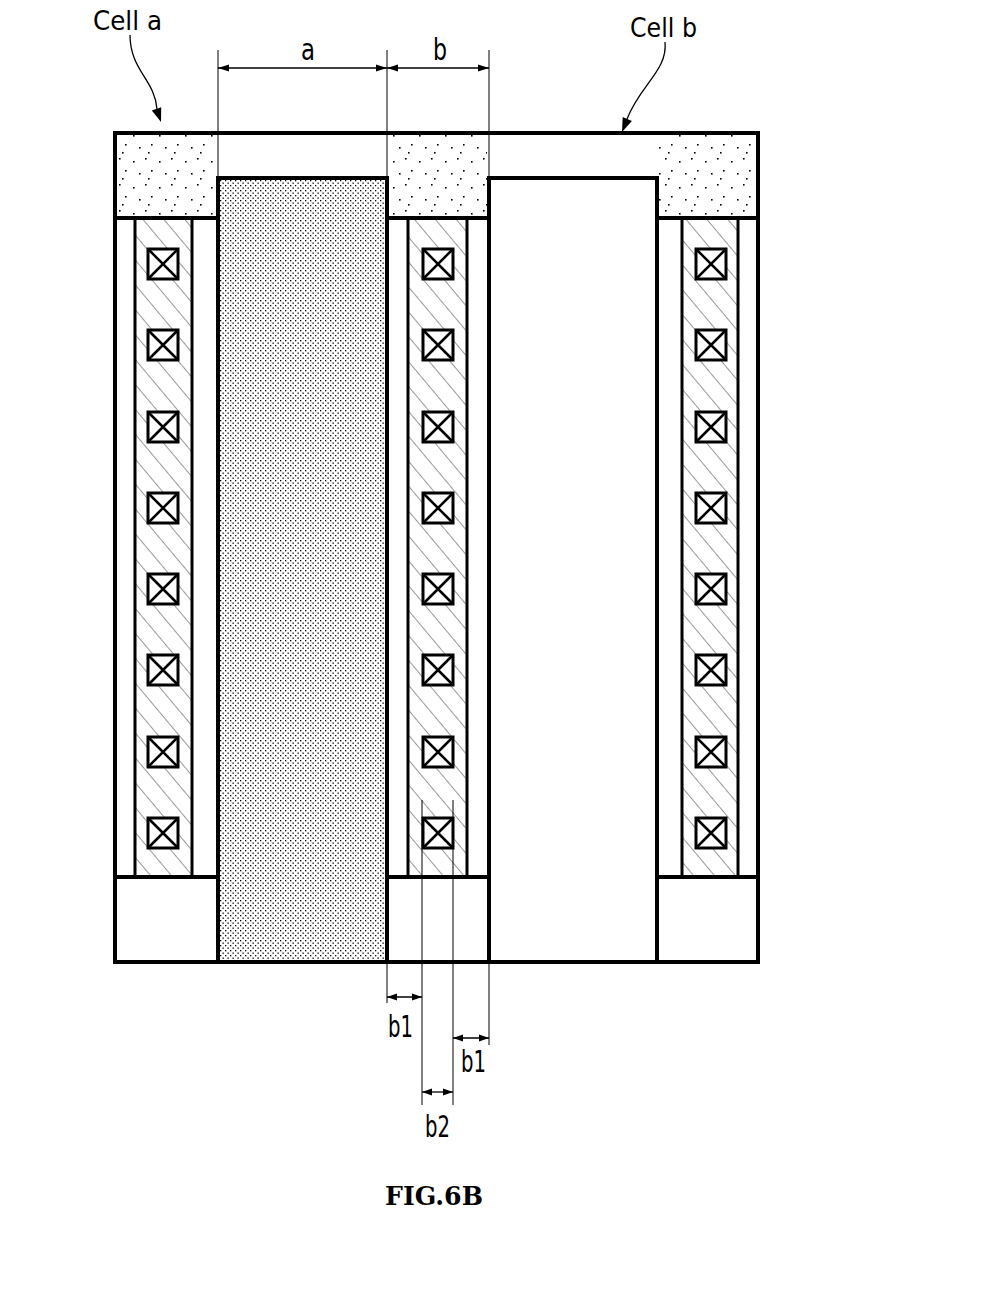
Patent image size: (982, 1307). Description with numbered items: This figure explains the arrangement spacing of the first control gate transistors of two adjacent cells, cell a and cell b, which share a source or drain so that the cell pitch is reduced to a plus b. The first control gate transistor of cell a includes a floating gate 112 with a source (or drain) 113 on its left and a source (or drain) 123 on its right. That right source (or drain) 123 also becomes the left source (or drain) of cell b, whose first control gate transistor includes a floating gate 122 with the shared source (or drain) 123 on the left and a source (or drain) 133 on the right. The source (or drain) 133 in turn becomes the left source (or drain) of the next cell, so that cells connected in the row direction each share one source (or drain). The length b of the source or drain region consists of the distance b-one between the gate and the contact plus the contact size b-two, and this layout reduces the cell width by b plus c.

The floating gate 112 is at (300, 940).
The source (or drain) 113 is at (150, 552).
The floating gate 122 is at (653, 553).
The source (or drain) 123 is at (455, 313).
The source (or drain) 133 is at (727, 468).